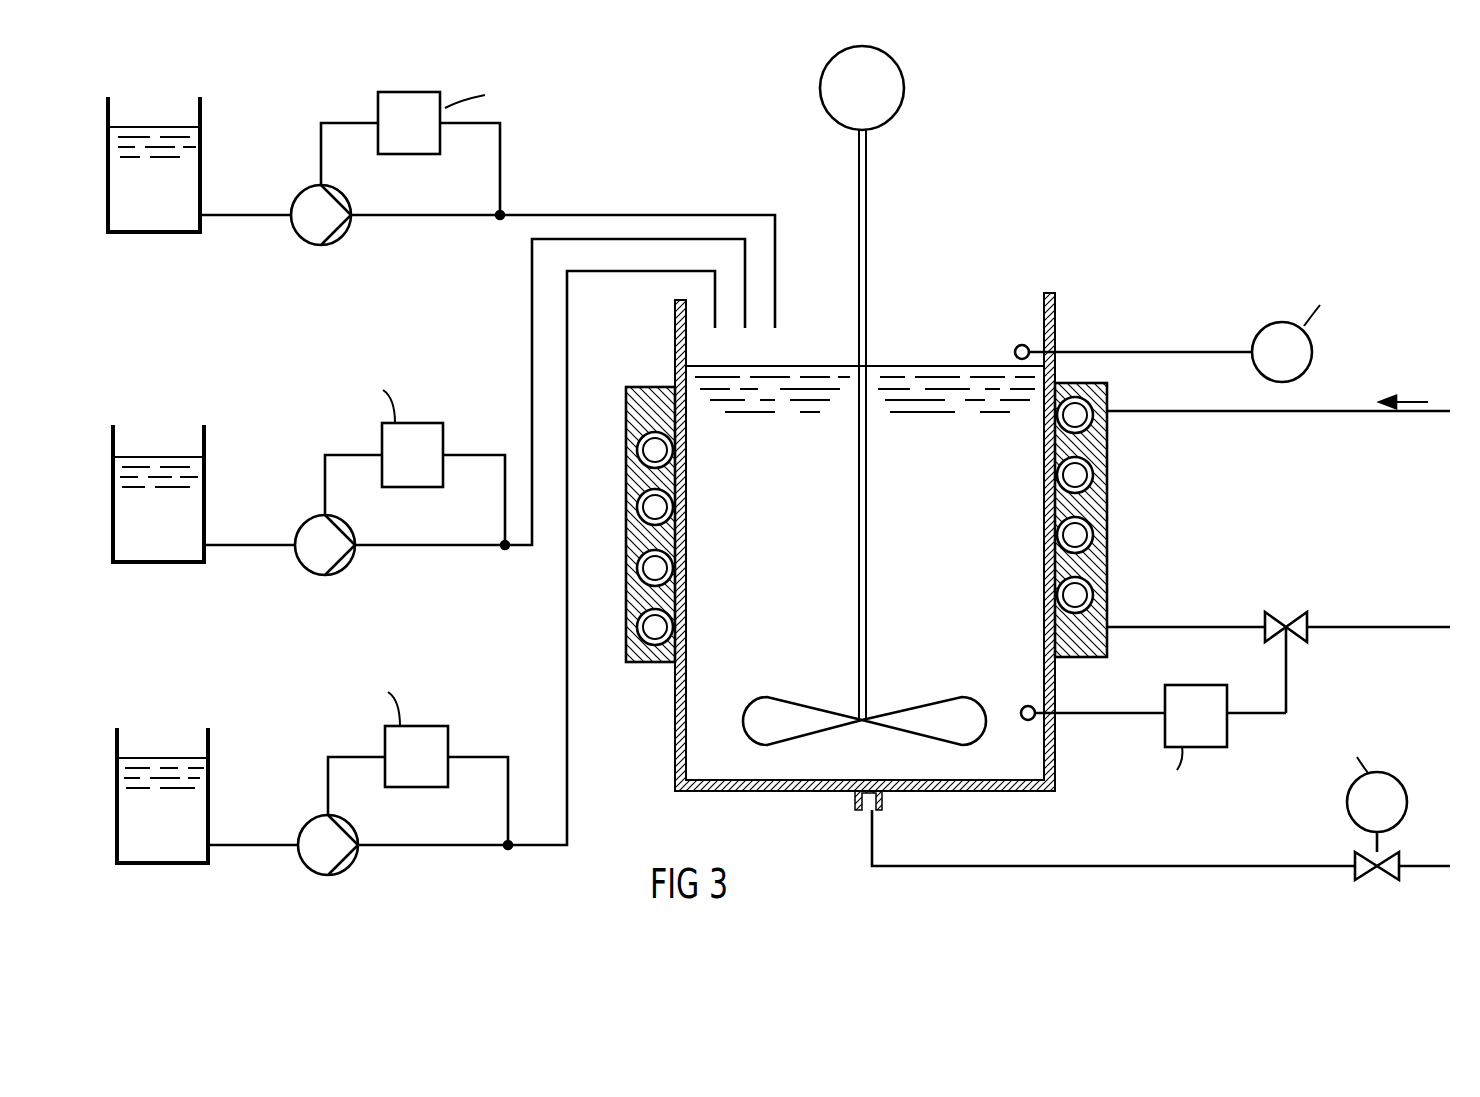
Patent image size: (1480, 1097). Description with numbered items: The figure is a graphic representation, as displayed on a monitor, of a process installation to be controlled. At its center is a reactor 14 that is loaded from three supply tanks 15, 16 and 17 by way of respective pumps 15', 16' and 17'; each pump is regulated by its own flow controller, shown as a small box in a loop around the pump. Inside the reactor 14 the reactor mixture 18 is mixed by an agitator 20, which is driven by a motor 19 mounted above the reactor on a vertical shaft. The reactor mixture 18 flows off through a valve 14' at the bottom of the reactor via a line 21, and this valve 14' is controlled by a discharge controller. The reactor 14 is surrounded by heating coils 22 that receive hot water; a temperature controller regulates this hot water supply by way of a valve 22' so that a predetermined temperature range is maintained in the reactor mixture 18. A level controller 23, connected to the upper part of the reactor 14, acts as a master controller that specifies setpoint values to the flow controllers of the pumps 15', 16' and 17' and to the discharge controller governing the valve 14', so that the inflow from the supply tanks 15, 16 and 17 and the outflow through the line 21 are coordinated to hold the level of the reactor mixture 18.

The reactor 14 is at (837, 551).
The valve 14' is at (1373, 845).
The supply tank 15 is at (185, 164).
The pump 15' is at (487, 234).
The supply tank 16 is at (189, 493).
The pump 16' is at (474, 407).
The supply tank 17 is at (193, 795).
The pump 17' is at (461, 573).
The reactor mixture 18 is at (922, 397).
The motor 19 is at (904, 88).
The agitator 20 is at (773, 724).
The line 21 is at (983, 866).
The heating coils 22 is at (906, 522).
The valve 22' is at (1278, 638).
The level controller 23 is at (1268, 326).